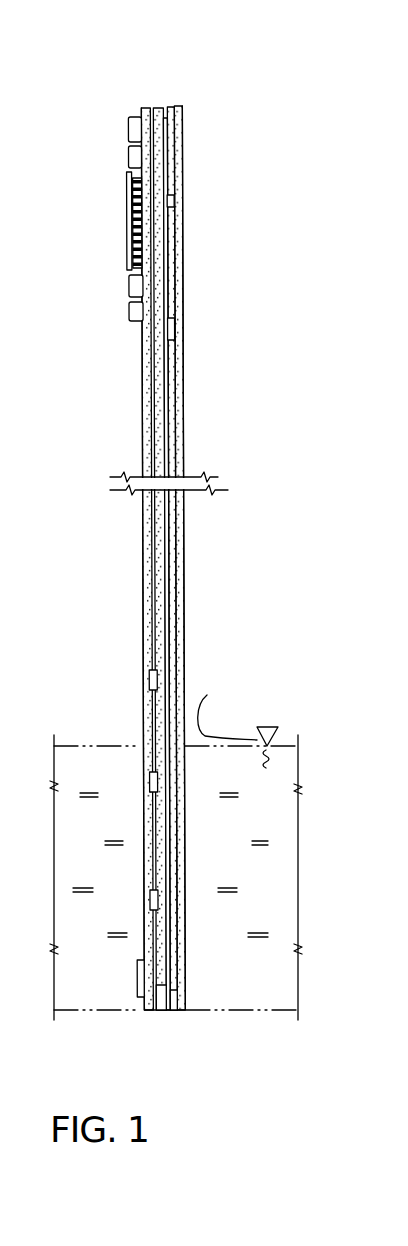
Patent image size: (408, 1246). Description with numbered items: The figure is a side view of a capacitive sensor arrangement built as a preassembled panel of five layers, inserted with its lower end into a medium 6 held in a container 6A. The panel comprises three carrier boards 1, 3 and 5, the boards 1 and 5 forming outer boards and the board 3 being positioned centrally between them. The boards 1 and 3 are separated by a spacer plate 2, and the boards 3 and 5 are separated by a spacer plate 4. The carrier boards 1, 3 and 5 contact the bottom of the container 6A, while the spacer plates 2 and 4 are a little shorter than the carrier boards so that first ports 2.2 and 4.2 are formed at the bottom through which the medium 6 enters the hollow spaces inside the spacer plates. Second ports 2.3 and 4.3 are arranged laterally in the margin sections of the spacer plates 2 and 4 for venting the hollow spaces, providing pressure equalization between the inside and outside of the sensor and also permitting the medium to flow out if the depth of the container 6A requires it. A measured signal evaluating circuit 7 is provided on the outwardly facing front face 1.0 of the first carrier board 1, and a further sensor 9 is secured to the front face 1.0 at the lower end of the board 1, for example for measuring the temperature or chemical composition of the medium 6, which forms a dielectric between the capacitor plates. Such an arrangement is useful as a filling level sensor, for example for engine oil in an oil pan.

The carrier board 1 is at (141, 100).
The spacer plate 2 is at (154, 100).
The carrier board 3 is at (164, 104).
The spacer plate 4 is at (170, 102).
The carrier board 5 is at (178, 101).
The front face 1.0 is at (141, 425).
The measured signal evaluating circuit 7 is at (118, 214).
The second port 4.3 is at (178, 322).
The second port 2.3 is at (150, 900).
The first port 2.2 is at (157, 1010).
The first port 4.2 is at (172, 1010).
The further sensor 9 is at (135, 988).
The medium 6 is at (272, 873).
The container 6A is at (260, 1011).